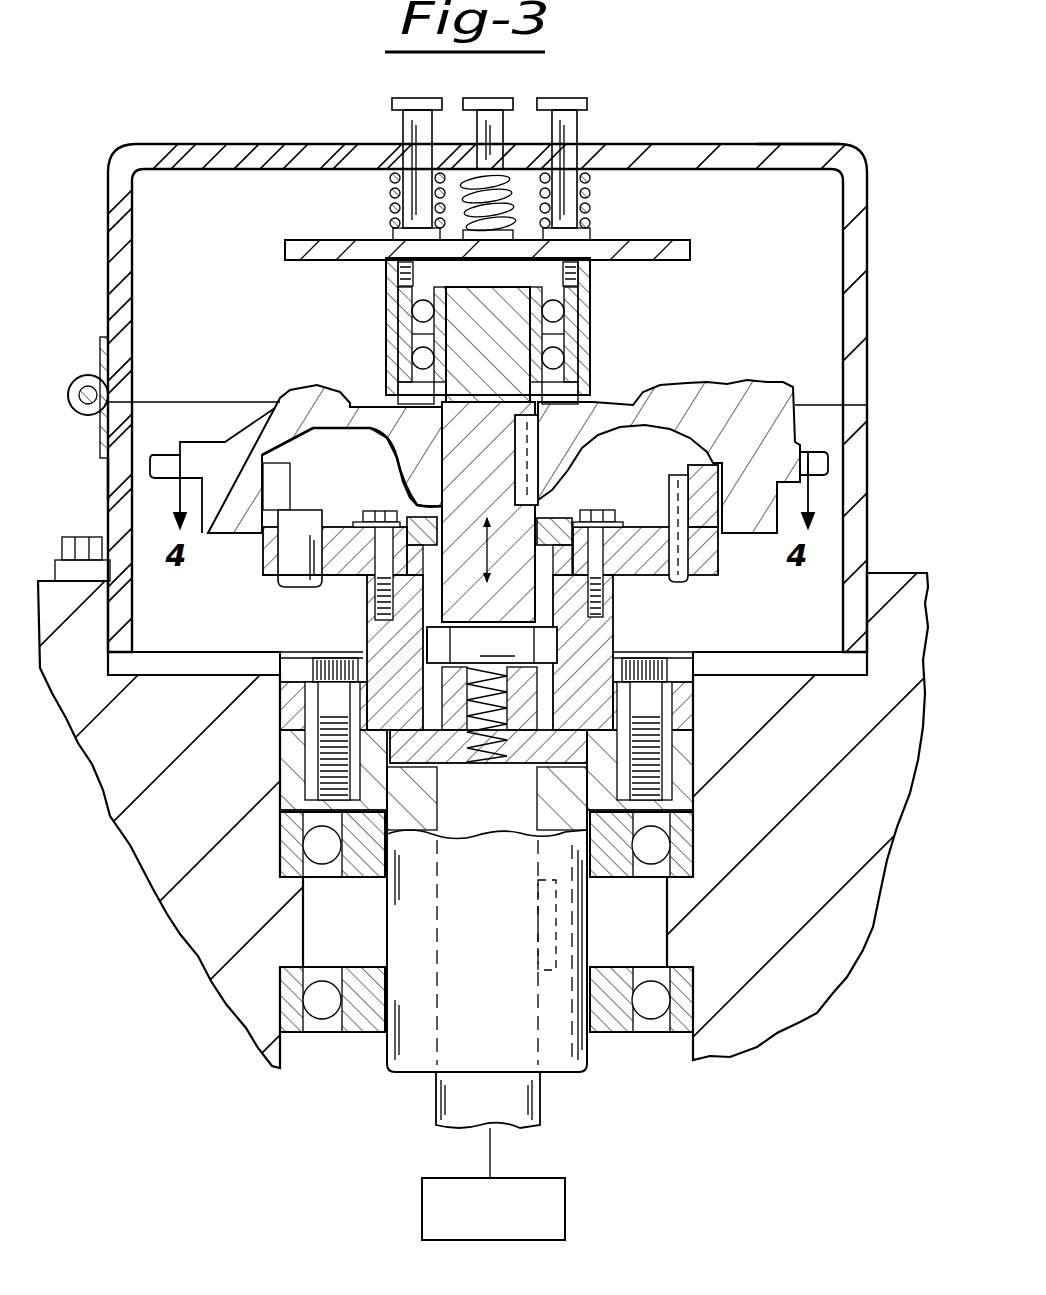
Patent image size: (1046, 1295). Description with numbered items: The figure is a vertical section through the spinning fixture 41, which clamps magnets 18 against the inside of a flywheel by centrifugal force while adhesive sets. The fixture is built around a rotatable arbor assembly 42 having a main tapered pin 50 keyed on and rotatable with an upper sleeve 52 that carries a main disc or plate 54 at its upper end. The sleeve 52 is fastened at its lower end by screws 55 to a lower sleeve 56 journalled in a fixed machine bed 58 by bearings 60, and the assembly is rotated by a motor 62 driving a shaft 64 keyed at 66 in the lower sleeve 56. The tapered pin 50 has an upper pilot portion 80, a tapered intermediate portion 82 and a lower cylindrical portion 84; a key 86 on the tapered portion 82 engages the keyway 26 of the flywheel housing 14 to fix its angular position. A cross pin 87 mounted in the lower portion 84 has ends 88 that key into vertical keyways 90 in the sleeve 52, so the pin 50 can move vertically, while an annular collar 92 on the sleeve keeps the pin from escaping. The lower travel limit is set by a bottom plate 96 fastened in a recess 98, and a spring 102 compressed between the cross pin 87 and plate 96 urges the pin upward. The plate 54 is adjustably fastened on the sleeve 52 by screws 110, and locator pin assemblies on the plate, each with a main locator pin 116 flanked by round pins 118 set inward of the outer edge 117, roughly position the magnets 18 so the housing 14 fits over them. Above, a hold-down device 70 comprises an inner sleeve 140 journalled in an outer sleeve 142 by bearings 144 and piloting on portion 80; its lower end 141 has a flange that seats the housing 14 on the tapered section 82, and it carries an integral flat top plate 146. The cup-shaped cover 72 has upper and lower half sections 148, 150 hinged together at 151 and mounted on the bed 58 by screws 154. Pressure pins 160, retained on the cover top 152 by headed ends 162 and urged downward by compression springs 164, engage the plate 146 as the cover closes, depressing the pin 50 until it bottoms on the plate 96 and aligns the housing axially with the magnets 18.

The flywheel housing 14 is at (280, 400).
The magnets 18 is at (300, 464).
The keyway 26 is at (592, 400).
The spinning fixture 41 is at (150, 928).
The rotatable arbor assembly 42 is at (676, 718).
The main tapered pin 50 is at (532, 515).
The upper sleeve 52 is at (618, 652).
The main disc or plate 54 is at (288, 574).
The screws 55 is at (340, 656).
The lower sleeve 56 is at (400, 1045).
The fixed machine bed 58 is at (62, 664).
The bearings 60 is at (643, 1025).
The motor 62 is at (565, 1208).
The shaft 64 is at (532, 1108).
The key 66 is at (558, 915).
The hold-down device 70 is at (600, 300).
The cup-shaped cover 72 is at (106, 243).
The upper pilot portion 80 is at (500, 340).
The tapered intermediate portion 82 is at (417, 508).
The lower cylindrical portion 84 is at (606, 600).
The key 86 is at (540, 480).
The cross pin 87 is at (492, 645).
The ends 88 is at (423, 648).
The keyway 90 is at (340, 700).
The annular collar 92 is at (410, 504).
The bottom plate 96 is at (540, 822).
The recess 98 is at (592, 750).
The spring 102 is at (468, 766).
The screws 110 is at (694, 558).
The main locator pin 116 is at (302, 588).
The outer edge 117 is at (270, 546).
The vertical round pin 118 is at (692, 578).
The inner sleeve 140 is at (418, 335).
The lower end 141 is at (398, 385).
The outer sleeve 142 is at (404, 288).
The bearings 144 is at (396, 300).
The flat top plate 146 is at (688, 240).
The upper half section 148 is at (108, 324).
The lower half section 150 is at (108, 470).
The hinge 151 is at (96, 430).
The top 152 is at (757, 144).
The screws 154 is at (92, 537).
The pressure pins 160 is at (578, 125).
The headed ends 162 is at (590, 98).
The compression springs 164 is at (594, 213).